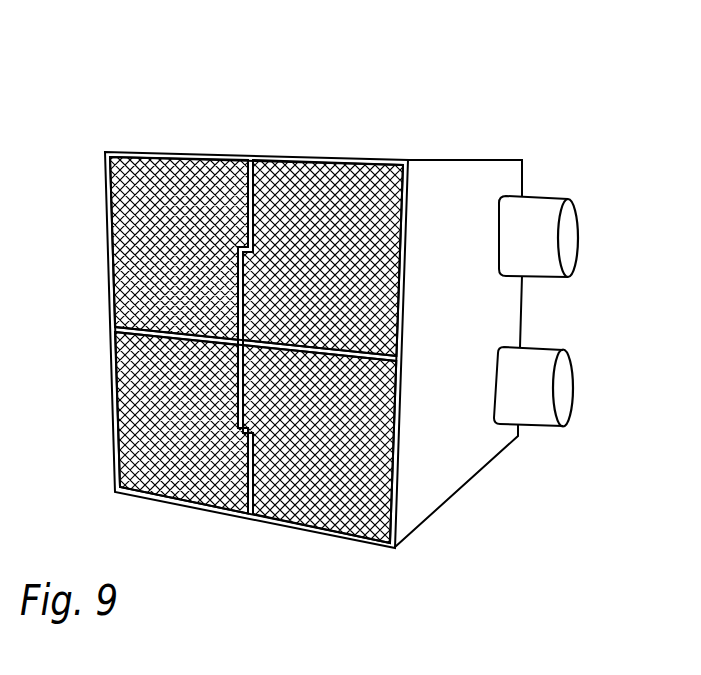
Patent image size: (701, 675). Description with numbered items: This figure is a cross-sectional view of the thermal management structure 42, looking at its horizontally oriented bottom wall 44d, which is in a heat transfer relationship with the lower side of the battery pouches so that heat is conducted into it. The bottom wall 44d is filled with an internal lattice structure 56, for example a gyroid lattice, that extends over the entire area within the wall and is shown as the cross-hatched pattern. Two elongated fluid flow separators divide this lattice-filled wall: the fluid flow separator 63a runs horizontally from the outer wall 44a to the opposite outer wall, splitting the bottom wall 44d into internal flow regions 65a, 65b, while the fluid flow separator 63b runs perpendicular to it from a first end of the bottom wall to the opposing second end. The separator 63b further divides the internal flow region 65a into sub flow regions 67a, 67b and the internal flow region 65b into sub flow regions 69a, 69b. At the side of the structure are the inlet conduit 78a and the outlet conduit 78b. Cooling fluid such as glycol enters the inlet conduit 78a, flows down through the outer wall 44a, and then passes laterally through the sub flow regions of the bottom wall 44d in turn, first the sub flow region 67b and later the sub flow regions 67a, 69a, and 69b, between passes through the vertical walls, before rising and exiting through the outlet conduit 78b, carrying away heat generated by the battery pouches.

The thermal management structure 42 is at (443, 128).
The outer wall 44a is at (427, 418).
The bottom wall 44d is at (125, 155).
The lattice structure 56 is at (213, 190).
The fluid flow separator 63a is at (200, 343).
The fluid flow separator 63b is at (252, 210).
The internal flow region 65a is at (327, 293).
The internal flow region 65b is at (167, 407).
The sub flow region 67a is at (153, 170).
The sub flow region 67b is at (282, 203).
The sub flow region 69a is at (195, 448).
The sub flow region 69b is at (368, 437).
The inlet conduit 78a is at (542, 213).
The outlet conduit 78b is at (537, 382).